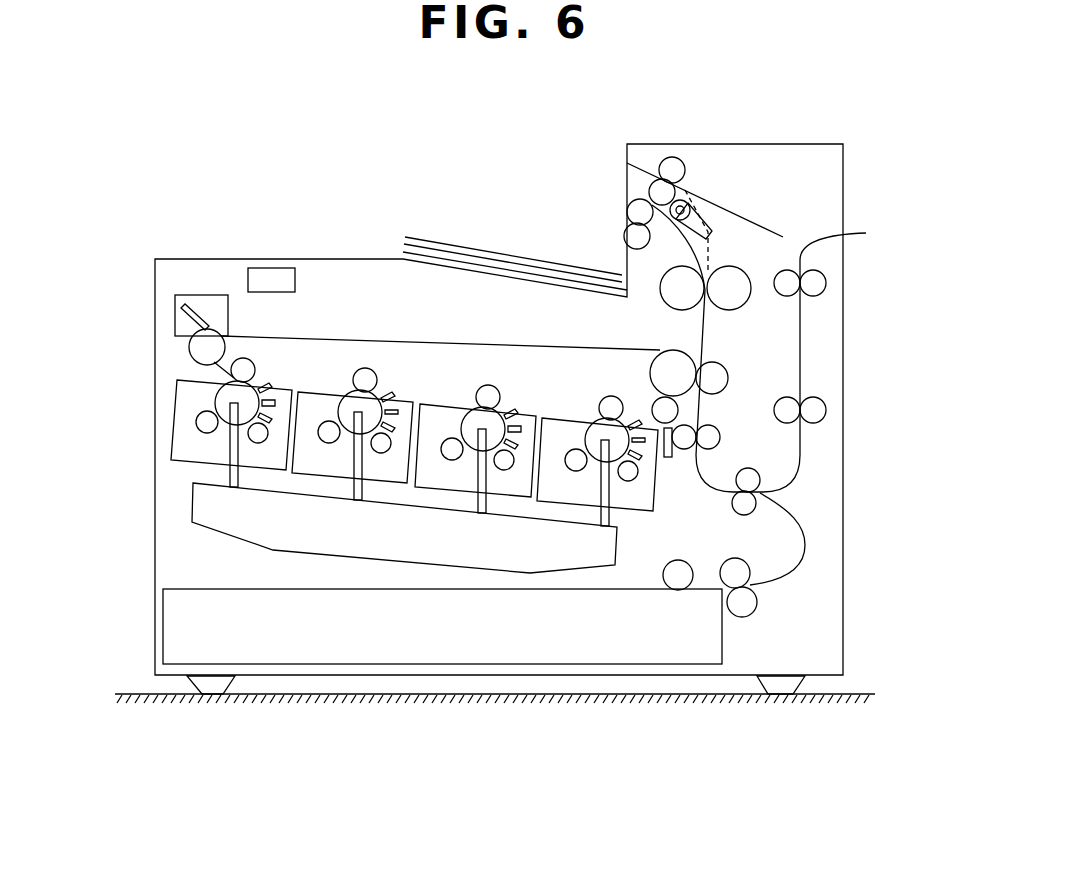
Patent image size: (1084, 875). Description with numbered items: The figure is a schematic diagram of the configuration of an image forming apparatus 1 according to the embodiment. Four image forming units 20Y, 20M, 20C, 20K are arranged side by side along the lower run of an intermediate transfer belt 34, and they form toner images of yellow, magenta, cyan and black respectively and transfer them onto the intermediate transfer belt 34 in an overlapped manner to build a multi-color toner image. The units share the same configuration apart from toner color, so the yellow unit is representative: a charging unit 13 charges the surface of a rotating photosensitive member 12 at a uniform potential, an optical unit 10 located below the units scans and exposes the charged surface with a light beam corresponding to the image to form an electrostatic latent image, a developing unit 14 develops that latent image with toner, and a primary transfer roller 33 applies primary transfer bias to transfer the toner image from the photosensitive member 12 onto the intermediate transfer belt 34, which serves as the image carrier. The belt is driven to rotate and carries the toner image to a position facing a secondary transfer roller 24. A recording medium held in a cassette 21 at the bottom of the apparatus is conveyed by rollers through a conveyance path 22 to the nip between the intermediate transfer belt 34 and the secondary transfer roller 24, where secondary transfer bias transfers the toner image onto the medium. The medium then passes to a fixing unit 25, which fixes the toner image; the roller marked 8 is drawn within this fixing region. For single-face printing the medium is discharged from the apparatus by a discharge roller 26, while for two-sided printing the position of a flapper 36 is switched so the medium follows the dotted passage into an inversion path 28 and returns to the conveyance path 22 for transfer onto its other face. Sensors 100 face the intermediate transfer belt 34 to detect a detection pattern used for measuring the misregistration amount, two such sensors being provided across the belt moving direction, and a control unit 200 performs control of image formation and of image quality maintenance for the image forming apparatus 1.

The image forming apparatus 1 is at (813, 144).
The fixing roller 8 is at (682, 288).
The optical unit 10 is at (453, 557).
The photosensitive member 12 is at (228, 440).
The charging unit 13 is at (258, 443).
The developing unit 14 is at (198, 427).
The image forming unit 20Y is at (183, 402).
The image forming unit 20M is at (313, 403).
The image forming unit 20C is at (437, 417).
The image forming unit 20K is at (560, 430).
The cassette 21 is at (653, 653).
The conveyance path 22 is at (806, 565).
The secondary transfer roller 24 is at (728, 380).
The fixing unit 25 is at (735, 272).
The discharge roller 26 is at (627, 210).
The inversion path 28 is at (836, 258).
The primary transfer roller 33 is at (197, 362).
The intermediate transfer belt 34 is at (318, 335).
The flapper 36 is at (716, 197).
The sensors 100 is at (670, 457).
The control unit 200 is at (257, 268).